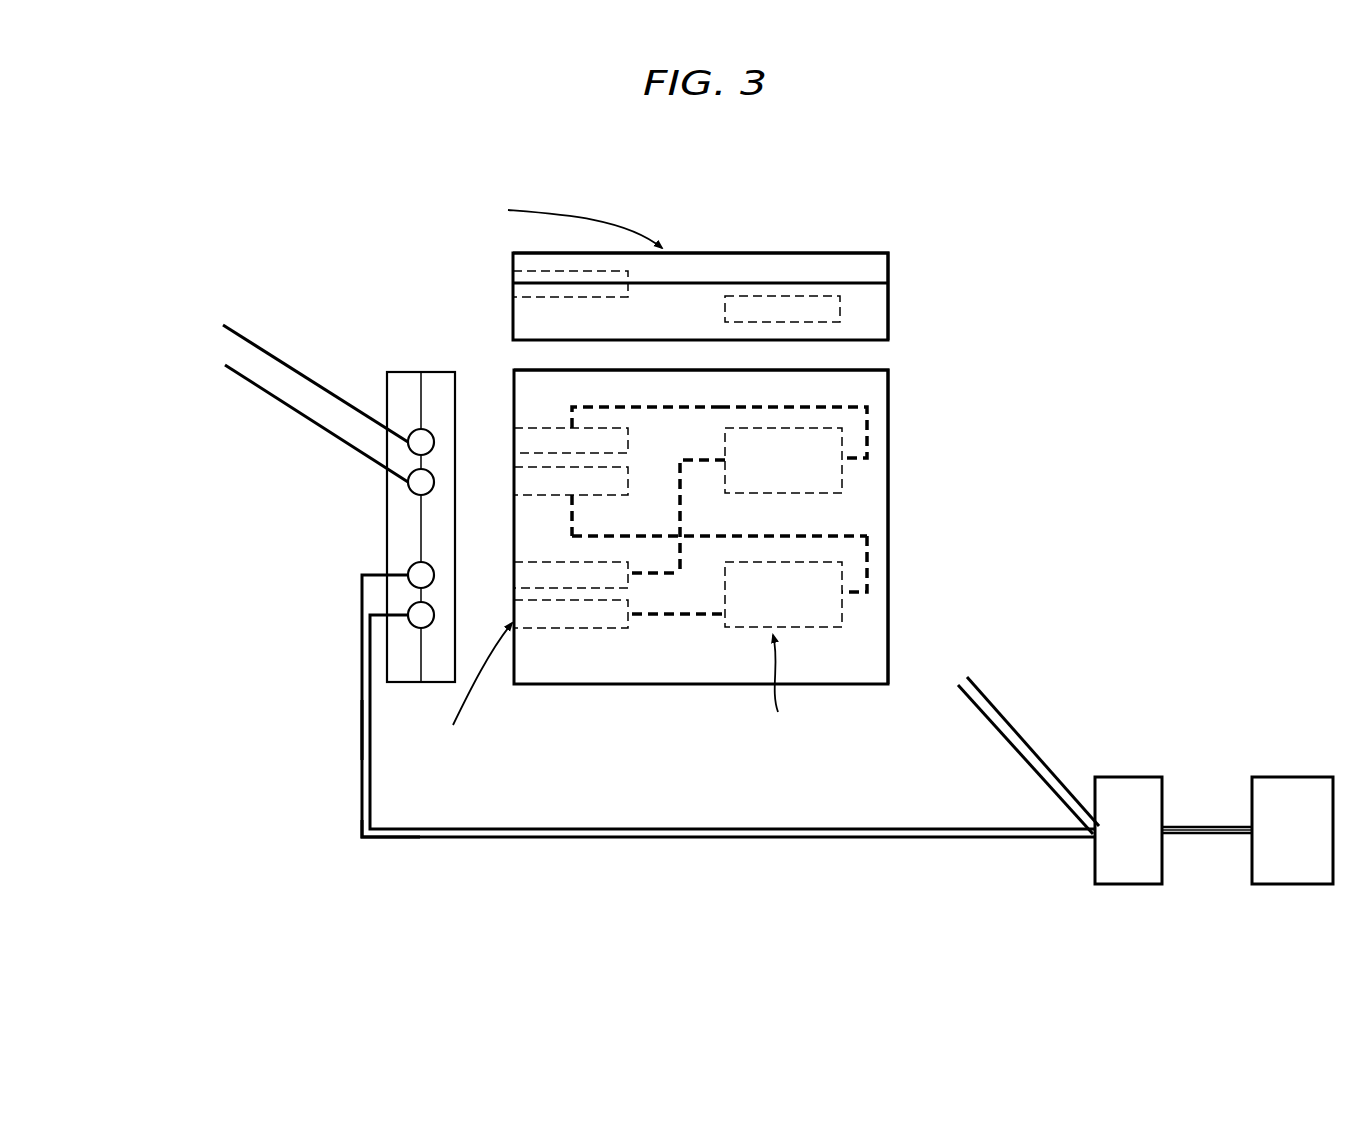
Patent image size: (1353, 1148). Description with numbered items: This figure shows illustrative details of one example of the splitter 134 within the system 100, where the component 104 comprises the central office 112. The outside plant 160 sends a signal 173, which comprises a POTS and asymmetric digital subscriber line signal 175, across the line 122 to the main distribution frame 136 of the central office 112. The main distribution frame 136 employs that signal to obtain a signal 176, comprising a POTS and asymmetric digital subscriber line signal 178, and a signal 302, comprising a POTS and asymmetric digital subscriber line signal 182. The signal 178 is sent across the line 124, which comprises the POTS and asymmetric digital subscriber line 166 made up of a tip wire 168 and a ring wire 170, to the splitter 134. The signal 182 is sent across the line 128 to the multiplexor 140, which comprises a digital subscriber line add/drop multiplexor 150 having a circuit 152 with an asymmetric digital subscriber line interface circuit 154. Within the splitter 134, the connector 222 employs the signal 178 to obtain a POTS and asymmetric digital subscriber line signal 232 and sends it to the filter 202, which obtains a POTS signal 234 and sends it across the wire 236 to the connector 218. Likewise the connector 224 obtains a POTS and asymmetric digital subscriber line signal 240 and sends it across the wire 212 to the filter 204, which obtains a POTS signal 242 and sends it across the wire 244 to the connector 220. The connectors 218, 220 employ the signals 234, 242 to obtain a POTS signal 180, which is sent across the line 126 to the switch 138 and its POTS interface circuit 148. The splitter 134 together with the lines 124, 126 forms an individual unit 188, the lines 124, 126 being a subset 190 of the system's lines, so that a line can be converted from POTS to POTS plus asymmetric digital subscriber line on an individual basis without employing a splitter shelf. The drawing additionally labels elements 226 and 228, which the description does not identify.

The system 100 is at (718, 139).
The component 104 is at (437, 855).
The central office 112 is at (1093, 287).
The line 122 is at (1205, 838).
The line 124 is at (215, 683).
The line 126 is at (258, 312).
The line 128 is at (1057, 752).
The splitter 134 is at (950, 240).
The main distribution frame 136 is at (1130, 777).
The switch 138 is at (155, 306).
The multiplexor 140 is at (934, 626).
The POTS interface circuit 148 is at (190, 282).
The digital subscriber line add/drop multiplexor 150 is at (974, 626).
The circuit 152 is at (1014, 626).
The asymmetric digital subscriber line interface circuit 154 is at (1046, 648).
The outside plant 160 is at (1292, 777).
The POTS and asymmetric digital subscriber line 166 is at (393, 840).
The wire 168 is at (358, 672).
The wire 170 is at (373, 708).
The signal 173 is at (1218, 810).
The POTS and asymmetric digital subscriber line signal 175 is at (1190, 822).
The signal 176 is at (315, 742).
The POTS and asymmetric digital subscriber line signal 178 is at (333, 796).
The POTS signal 180 is at (208, 383).
The POTS and asymmetric digital subscriber line signal 182 is at (990, 698).
The individual unit 188 is at (818, 242).
The subset 190 is at (455, 160).
The filter 202 is at (798, 472).
The filter 204 is at (798, 607).
The wire 212 is at (655, 619).
The connector 218 is at (546, 428).
The connector 220 is at (546, 495).
The connector 222 is at (632, 581).
The connector 224 is at (560, 628).
The IDC terminal block 226 is at (514, 575).
The IDC terminal 228 is at (612, 628).
The POTS and asymmetric digital subscriber line signal 232 is at (680, 555).
The POTS signal 234 is at (600, 407).
The wire 236 is at (724, 407).
The POTS and asymmetric digital subscriber line signal 240 is at (698, 619).
The POTS signal 242 is at (724, 536).
The wire 244 is at (842, 538).
The signal 302 is at (963, 703).